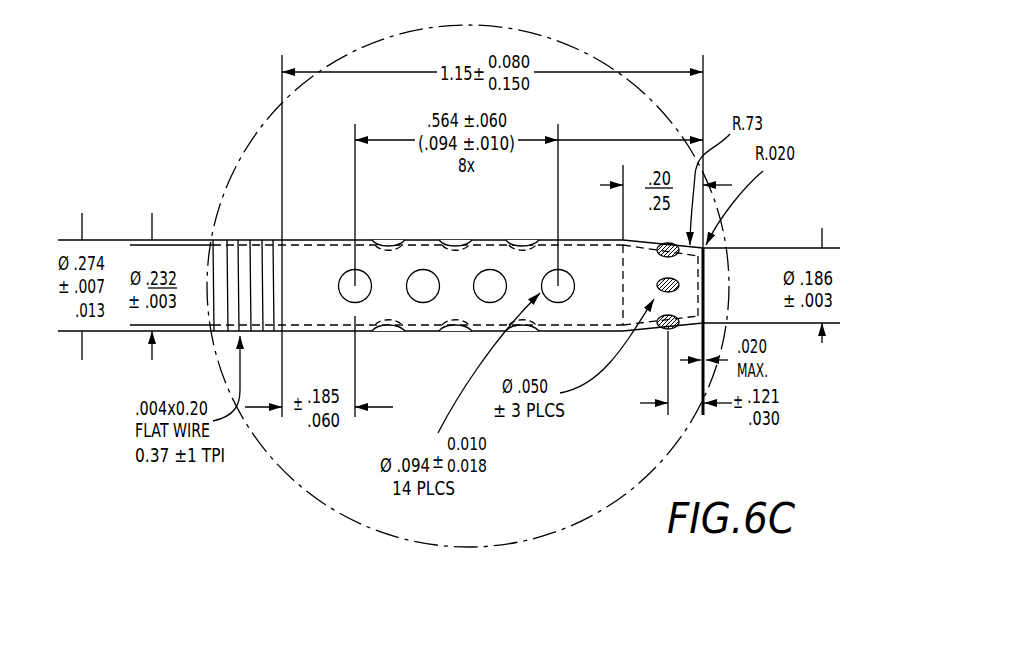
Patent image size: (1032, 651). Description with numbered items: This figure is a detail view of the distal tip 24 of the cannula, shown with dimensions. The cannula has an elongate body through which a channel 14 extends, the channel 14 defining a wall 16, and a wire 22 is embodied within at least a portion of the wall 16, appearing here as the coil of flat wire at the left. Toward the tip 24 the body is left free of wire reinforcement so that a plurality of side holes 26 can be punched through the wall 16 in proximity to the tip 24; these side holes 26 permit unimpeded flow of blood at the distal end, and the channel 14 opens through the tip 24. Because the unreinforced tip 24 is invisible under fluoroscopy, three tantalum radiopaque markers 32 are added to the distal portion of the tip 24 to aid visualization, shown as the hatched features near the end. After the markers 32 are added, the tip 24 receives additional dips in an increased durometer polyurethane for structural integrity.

The channel 14 is at (245, 315).
The wall 16 is at (257, 240).
The wire 22 is at (233, 332).
The tip 24 is at (826, 153).
The side holes 26 is at (489, 269).
The radiopaque markers 32 is at (657, 286).